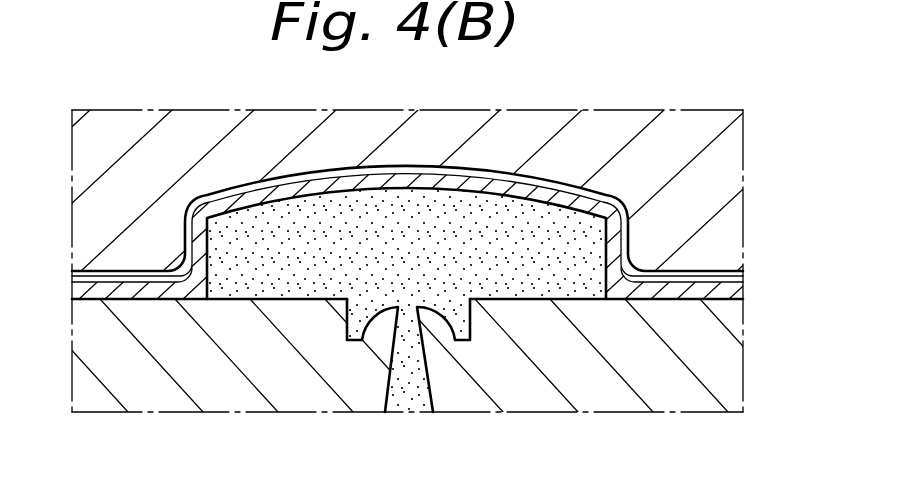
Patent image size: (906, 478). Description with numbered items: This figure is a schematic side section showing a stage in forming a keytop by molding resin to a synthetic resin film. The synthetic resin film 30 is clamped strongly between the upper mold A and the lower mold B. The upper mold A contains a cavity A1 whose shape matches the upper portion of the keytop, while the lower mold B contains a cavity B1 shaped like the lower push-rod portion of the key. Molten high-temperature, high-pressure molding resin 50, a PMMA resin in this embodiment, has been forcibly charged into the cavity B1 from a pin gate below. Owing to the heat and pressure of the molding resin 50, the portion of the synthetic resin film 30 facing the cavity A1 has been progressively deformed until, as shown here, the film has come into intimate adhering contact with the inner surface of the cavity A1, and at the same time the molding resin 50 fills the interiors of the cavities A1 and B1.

The upper mold A is at (642, 150).
The cavity A1 is at (288, 180).
The synthetic resin film 30 is at (742, 292).
The molding resin 50 is at (243, 288).
The lower mold B is at (600, 395).
The cavity B1 is at (348, 334).